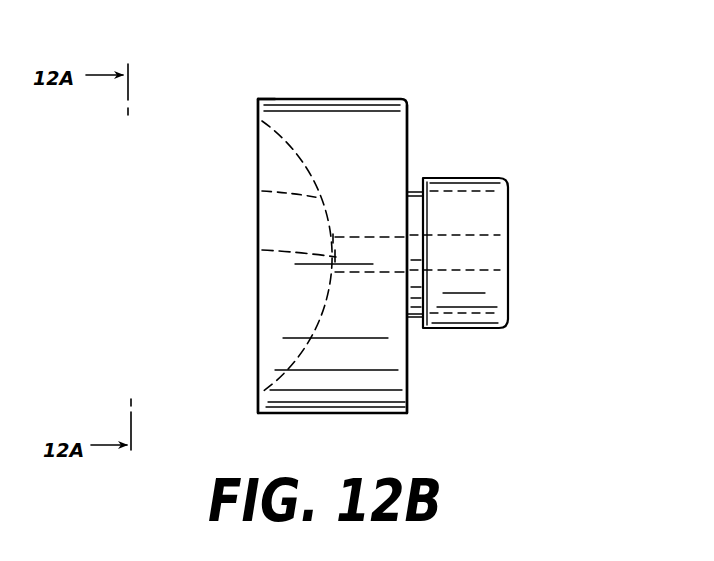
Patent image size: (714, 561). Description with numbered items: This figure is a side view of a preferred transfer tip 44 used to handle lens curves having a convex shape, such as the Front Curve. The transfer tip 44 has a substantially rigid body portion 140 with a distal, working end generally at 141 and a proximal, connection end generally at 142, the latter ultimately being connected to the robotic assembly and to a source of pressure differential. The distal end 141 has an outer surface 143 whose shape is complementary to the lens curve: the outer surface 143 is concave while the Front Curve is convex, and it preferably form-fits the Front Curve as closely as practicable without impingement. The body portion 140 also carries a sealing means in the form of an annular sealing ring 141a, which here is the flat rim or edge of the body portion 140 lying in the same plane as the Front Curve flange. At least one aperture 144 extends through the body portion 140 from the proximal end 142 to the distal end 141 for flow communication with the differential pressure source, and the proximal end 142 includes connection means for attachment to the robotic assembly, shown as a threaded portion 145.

The transfer tip 44 is at (521, 386).
The substantially rigid body portion 140 is at (345, 115).
The distal end 141 is at (258, 116).
The annular sealing ring 141a is at (251, 93).
The proximal end 142 is at (408, 108).
The outer surface 143 is at (262, 191).
The aperture 144 is at (262, 249).
The threaded portion 145 is at (481, 178).